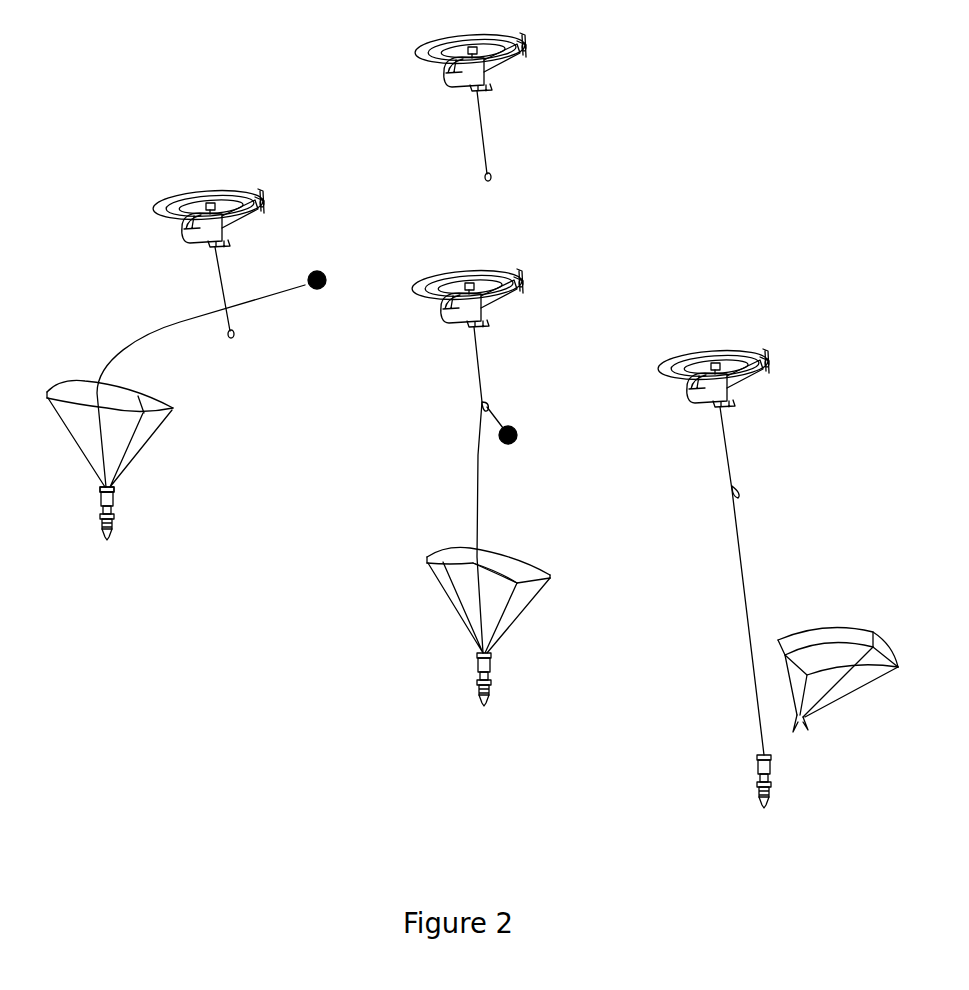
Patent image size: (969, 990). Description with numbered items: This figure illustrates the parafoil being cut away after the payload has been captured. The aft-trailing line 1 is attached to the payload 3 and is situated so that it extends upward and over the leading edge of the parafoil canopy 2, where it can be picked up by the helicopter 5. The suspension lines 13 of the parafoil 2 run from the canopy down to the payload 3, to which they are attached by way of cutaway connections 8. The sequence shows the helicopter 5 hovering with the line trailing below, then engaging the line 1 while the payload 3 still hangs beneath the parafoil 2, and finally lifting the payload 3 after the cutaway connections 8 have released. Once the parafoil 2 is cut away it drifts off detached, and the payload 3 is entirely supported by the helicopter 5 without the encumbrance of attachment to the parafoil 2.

The aft-trailing line 1 is at (180, 318).
The parafoil canopy 2 is at (143, 390).
The payload 3 is at (113, 514).
The helicopter 5 is at (688, 398).
The cutaway connections 8 is at (101, 497).
The suspension lines 13 is at (158, 426).